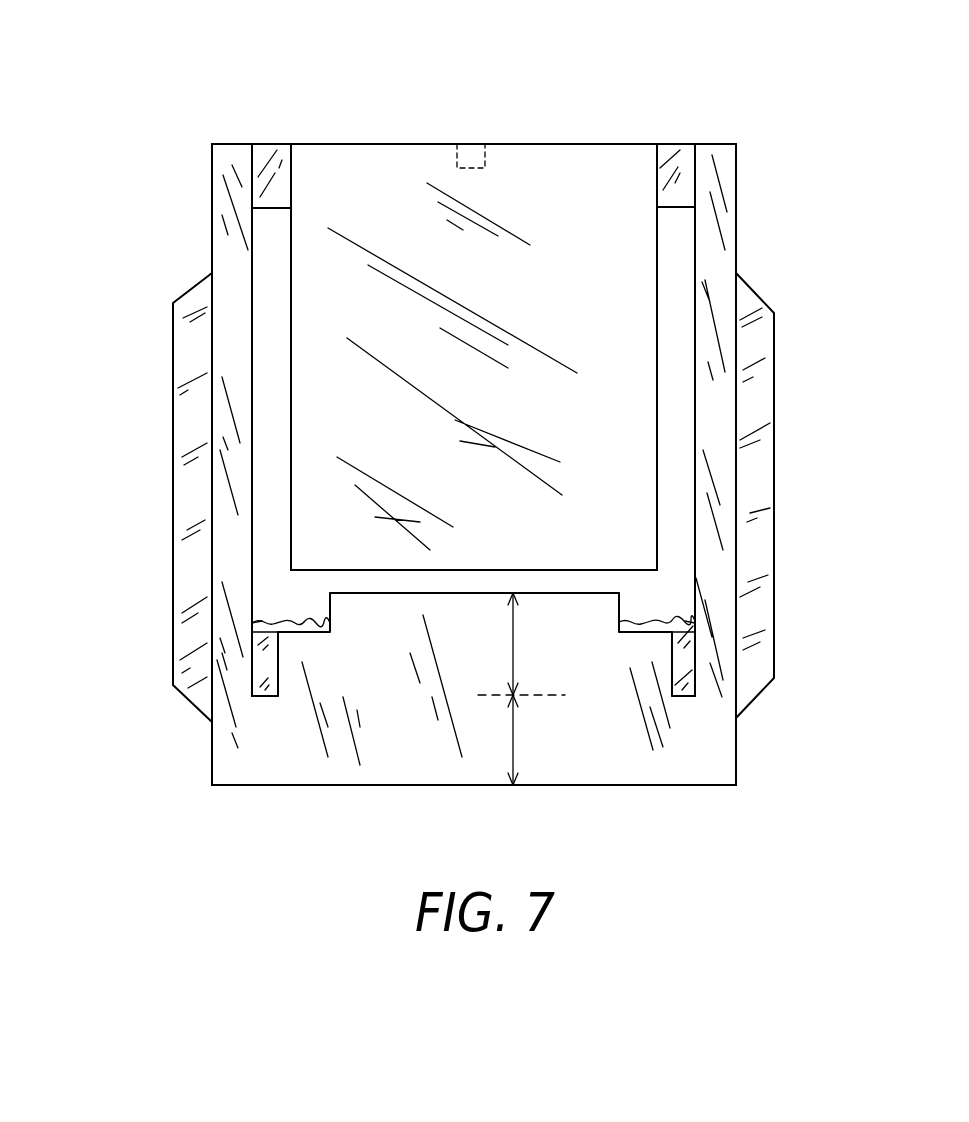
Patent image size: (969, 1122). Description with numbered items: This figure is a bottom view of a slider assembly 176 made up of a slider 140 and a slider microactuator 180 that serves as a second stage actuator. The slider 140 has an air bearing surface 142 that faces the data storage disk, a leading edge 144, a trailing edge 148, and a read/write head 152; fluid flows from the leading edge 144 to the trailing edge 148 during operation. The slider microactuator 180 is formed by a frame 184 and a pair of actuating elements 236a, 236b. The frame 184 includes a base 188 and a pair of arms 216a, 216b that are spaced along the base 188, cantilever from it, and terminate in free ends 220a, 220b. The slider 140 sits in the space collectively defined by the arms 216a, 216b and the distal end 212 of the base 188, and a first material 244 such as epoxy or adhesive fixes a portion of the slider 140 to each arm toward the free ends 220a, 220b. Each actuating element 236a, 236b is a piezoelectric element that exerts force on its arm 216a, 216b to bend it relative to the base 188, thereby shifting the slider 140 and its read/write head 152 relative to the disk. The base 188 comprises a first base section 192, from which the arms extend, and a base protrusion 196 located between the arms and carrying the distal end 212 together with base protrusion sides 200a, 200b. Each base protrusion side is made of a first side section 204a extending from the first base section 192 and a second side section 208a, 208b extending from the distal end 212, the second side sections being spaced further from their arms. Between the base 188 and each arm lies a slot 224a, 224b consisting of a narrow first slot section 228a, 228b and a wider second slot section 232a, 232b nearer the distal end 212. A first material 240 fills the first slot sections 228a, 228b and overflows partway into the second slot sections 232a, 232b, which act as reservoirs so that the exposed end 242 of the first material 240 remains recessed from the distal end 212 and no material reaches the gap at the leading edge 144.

The slider assembly 176 is at (603, 97).
The trailing edge 148 is at (393, 143).
The read/write head 152 is at (473, 158).
The air bearing surface 142 is at (567, 300).
The slider 140 is at (655, 397).
The leading edge 144 is at (480, 577).
The slider microactuator 180 is at (252, 822).
The frame 184 is at (738, 787).
The base 188 is at (408, 738).
The first base section 192 is at (513, 745).
The base protrusion 196 is at (513, 640).
The distal end 212 is at (440, 592).
The base protrusion side 200a is at (309, 612).
The base protrusion side 200b is at (630, 605).
The first side section 204a is at (275, 672).
The second side section 208a is at (326, 622).
The second side section 208b is at (622, 622).
The arm 216a is at (210, 217).
The arm 216b is at (740, 220).
The free end 220a is at (228, 143).
The free end 220b is at (707, 142).
The slot 224a is at (277, 605).
The slot 224b is at (654, 605).
The first slot section 228a is at (160, 640).
The first slot section 228b is at (787, 635).
The second slot section 232a is at (160, 595).
The second slot section 232b is at (787, 593).
The actuating element 236a is at (175, 558).
The actuating element 236b is at (865, 440).
The first material 240 is at (272, 675).
The exposed end 242 is at (268, 625).
The first material 244 is at (268, 143).